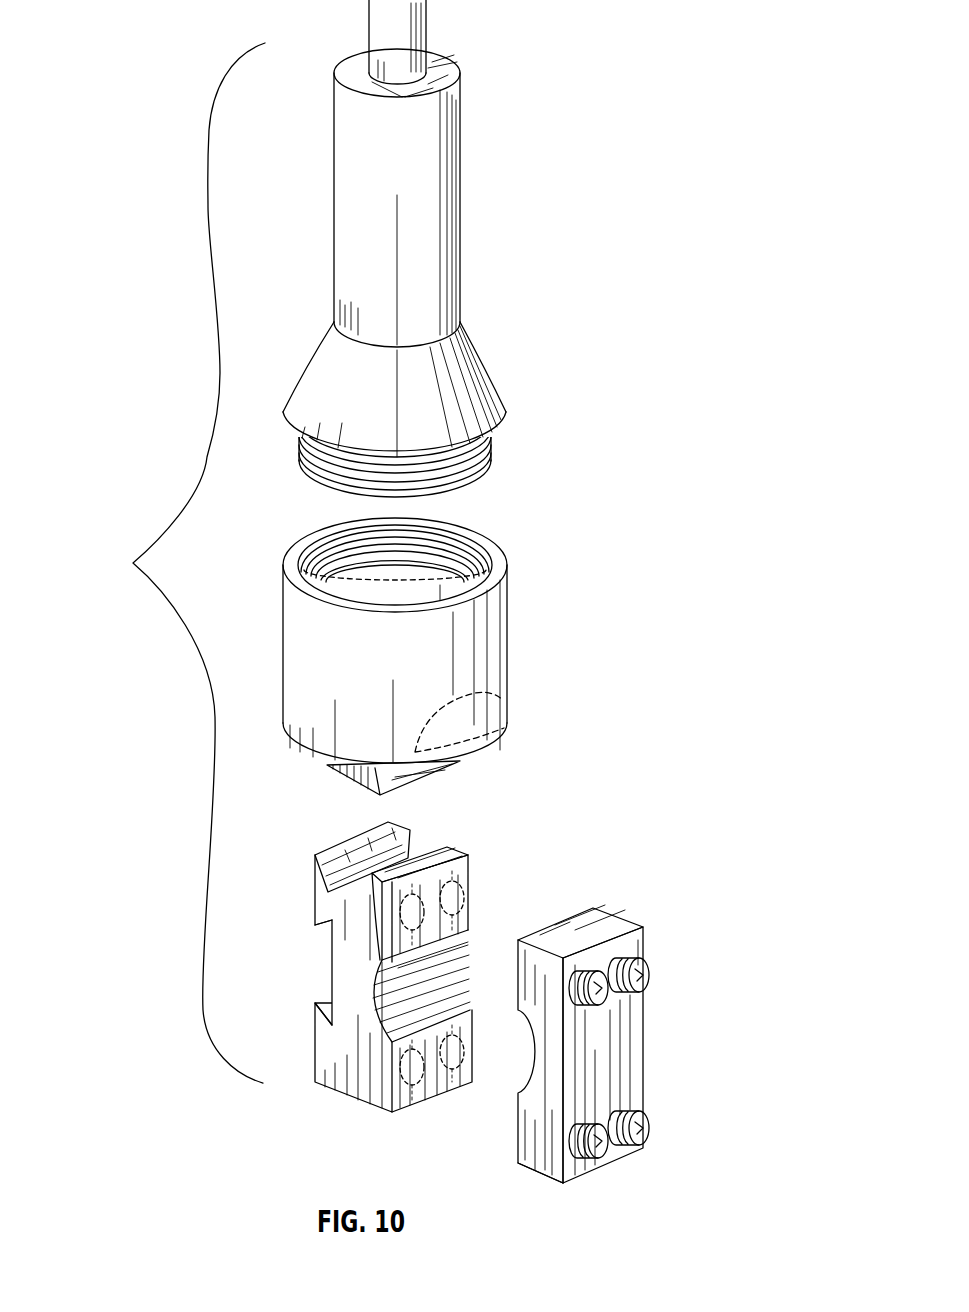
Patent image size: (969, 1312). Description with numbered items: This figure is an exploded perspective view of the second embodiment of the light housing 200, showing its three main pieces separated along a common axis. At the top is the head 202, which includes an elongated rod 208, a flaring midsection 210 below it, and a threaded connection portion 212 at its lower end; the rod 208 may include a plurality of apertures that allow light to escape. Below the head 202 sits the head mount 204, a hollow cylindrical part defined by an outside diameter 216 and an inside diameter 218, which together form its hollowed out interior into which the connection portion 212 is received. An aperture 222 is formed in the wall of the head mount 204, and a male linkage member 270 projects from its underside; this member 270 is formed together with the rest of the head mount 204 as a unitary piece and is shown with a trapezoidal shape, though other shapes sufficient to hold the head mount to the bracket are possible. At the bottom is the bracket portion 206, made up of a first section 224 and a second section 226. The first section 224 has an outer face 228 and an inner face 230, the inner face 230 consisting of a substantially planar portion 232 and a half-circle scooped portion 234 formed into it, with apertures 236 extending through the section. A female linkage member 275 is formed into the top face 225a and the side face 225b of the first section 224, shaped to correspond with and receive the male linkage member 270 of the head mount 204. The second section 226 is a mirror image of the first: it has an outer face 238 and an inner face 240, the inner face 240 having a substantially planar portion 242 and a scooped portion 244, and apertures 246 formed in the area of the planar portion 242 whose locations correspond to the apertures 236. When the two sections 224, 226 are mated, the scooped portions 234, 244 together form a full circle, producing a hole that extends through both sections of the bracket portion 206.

The housing 200 is at (162, 563).
The head 202 is at (520, 123).
The head mount 204 is at (524, 626).
The bracket portion 206 is at (607, 828).
The rod 208 is at (437, 219).
The midsection 210 is at (476, 385).
The connection portion 212 is at (493, 449).
The outside diameter 216 is at (492, 655).
The inside diameter 218 is at (458, 553).
The aperture 222 is at (478, 710).
The first section 224 is at (470, 858).
The top face 225a is at (437, 865).
The side face 225b is at (315, 918).
The second section 226 is at (600, 930).
The outer face 228 is at (315, 915).
The inner face 230 is at (470, 906).
The substantially planar portion 232 is at (466, 890).
The scooped portion 234 is at (438, 973).
The apertures 236 is at (408, 1077).
The outer face 238 is at (633, 1052).
The inner face 240 is at (572, 914).
The substantially planar portion 242 is at (512, 1142).
The scooped portion 244 is at (532, 1040).
The apertures 246 is at (630, 957).
The male linkage member 270 is at (430, 783).
The female linkage member 275 is at (350, 879).